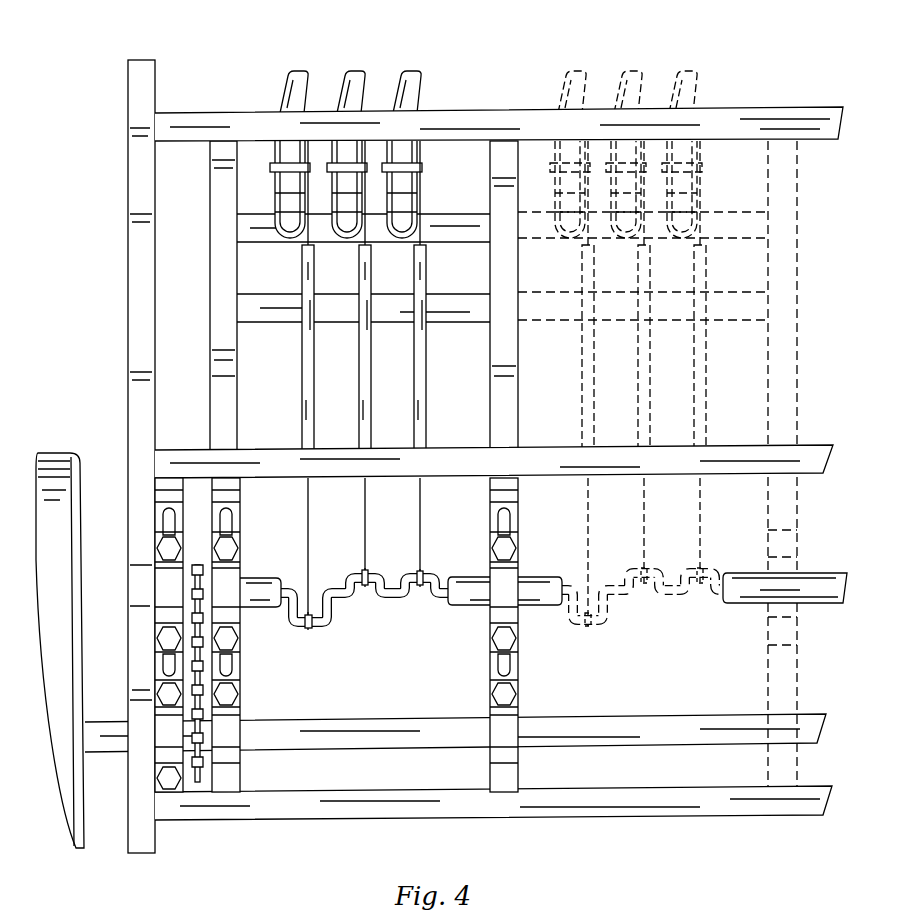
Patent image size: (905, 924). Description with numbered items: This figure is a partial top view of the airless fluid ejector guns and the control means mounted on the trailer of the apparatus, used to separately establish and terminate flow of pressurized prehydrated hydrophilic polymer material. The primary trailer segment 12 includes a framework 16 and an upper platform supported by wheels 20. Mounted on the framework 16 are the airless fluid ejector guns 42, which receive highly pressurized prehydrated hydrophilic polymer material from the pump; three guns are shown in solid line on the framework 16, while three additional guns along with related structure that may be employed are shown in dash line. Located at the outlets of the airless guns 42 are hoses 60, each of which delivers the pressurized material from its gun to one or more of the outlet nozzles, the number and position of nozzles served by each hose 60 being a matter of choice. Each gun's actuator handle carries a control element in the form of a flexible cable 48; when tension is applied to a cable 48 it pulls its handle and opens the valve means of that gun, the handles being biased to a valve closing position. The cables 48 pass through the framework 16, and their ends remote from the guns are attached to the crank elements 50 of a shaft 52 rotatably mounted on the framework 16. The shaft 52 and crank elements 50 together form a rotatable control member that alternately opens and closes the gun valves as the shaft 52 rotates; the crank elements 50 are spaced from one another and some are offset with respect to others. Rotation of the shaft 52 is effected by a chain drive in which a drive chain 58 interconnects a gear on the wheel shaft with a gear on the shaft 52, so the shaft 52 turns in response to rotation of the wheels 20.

The primary trailer segment 12 is at (748, 108).
The framework 16 is at (127, 238).
The wheels 20 is at (55, 453).
The airless fluid ejector guns 42 is at (342, 232).
The flexible cable 48 is at (363, 522).
The crank element 50 is at (356, 570).
The shaft 52 is at (442, 598).
The drive chain 58 is at (203, 756).
The hoses 60 is at (294, 72).